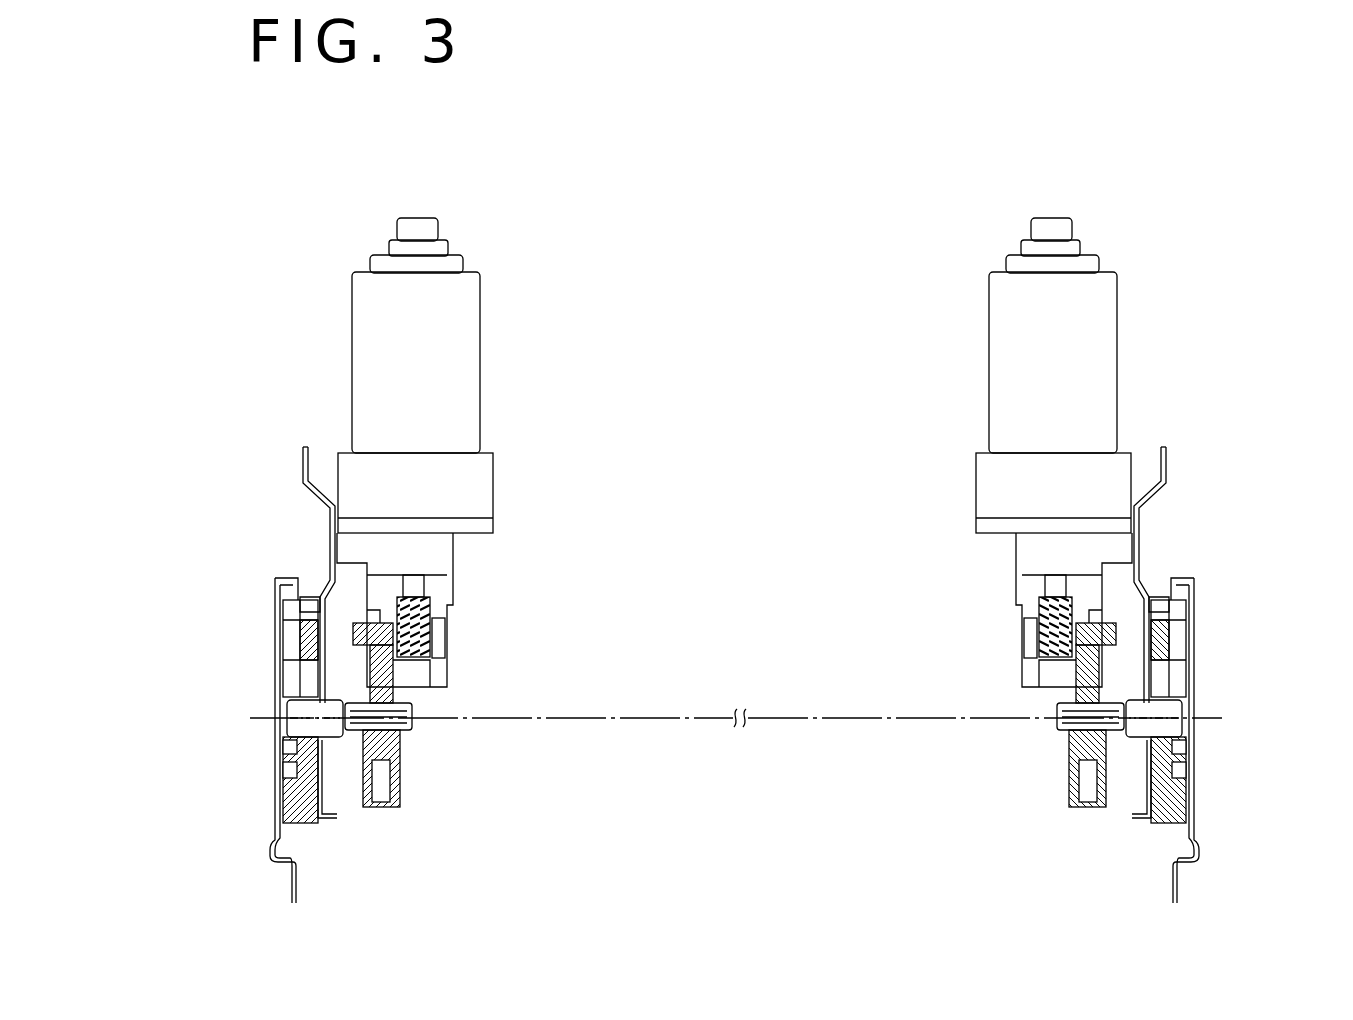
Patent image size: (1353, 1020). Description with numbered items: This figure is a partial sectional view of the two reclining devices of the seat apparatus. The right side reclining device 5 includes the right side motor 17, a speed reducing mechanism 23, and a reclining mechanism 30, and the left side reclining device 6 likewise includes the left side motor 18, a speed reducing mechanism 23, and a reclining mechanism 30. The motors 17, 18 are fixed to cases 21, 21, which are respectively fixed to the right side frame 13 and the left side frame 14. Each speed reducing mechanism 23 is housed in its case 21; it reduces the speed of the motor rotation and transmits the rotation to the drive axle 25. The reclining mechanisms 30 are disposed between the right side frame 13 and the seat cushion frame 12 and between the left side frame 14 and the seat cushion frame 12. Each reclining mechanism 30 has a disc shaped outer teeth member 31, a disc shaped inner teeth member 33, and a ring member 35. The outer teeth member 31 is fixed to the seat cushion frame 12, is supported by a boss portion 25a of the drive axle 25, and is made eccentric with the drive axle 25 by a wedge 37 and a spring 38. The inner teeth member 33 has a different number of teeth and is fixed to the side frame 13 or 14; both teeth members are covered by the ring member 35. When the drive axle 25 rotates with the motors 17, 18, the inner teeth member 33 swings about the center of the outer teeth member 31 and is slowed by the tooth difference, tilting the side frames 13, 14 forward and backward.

The right side reclining device 5 is at (480, 398).
The left side reclining device 6 is at (965, 398).
The seat cushion frame 12 is at (735, 740).
The right side frame 13 is at (283, 568).
The left side frame 14 is at (1186, 573).
The right side motor 17 is at (445, 375).
The left side motor 18 is at (1018, 375).
The case 21 is at (734, 605).
The speed reducing mechanism 23 is at (734, 650).
The drive axle 25 is at (734, 755).
The boss portion 25a is at (736, 718).
The reclining mechanism 30 is at (736, 682).
The outer teeth member 31 is at (738, 628).
The inner teeth member 33 is at (734, 797).
The ring member 35 is at (735, 559).
The wedge 37 is at (735, 759).
The spring 38 is at (732, 790).